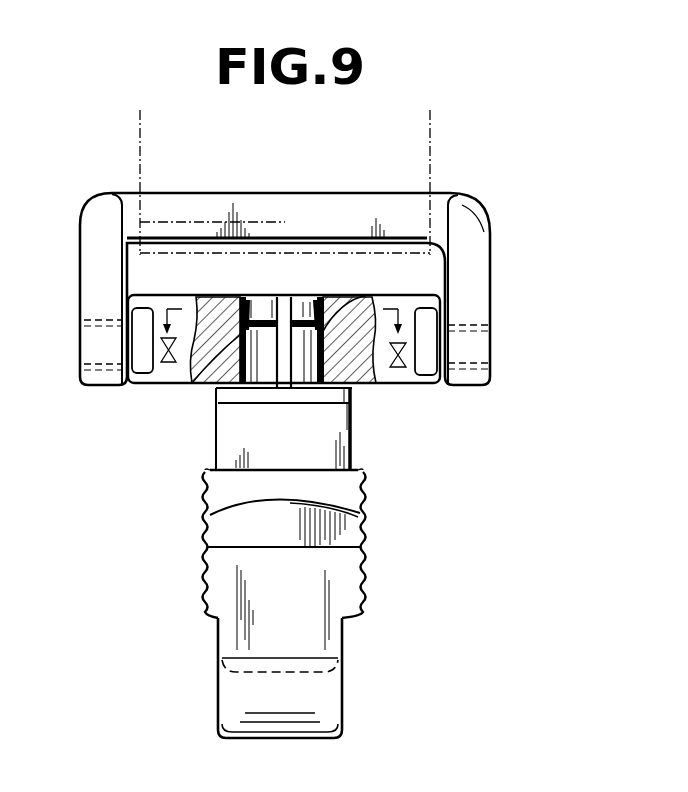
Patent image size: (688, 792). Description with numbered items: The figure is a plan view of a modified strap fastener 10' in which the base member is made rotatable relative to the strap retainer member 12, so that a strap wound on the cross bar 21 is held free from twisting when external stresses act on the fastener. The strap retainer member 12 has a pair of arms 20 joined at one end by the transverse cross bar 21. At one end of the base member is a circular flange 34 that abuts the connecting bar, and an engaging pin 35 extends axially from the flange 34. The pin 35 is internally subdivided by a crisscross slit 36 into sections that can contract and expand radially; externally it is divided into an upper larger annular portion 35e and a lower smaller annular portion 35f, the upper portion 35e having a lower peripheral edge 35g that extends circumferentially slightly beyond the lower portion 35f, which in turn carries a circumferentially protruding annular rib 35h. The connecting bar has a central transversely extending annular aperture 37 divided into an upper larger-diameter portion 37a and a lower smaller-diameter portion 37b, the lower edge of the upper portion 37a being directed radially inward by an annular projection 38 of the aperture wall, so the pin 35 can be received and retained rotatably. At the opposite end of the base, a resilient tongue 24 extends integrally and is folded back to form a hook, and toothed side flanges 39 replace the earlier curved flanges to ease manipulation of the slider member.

The modified strap fastener 10' is at (326, 199).
The strap retainer member 12 is at (94, 194).
The arms 20 is at (80, 268).
The cross bar 21 is at (378, 200).
The resilient tongue 24 is at (336, 718).
The circular flange 34 is at (239, 404).
The engaging pin 35 is at (263, 286).
The upper larger annular portion 35e is at (254, 306).
The lower smaller annular portion 35f is at (215, 386).
The lower peripheral edge 35g is at (200, 382).
The annular rib 35h is at (352, 408).
The crisscross slit 36 is at (294, 392).
The annular aperture 37 is at (321, 306).
The upper larger-diameter portion 37a is at (331, 322).
The lower smaller-diameter portion 37b is at (351, 389).
The annular projection 38 is at (373, 313).
The toothed side flanges 39 is at (205, 572).